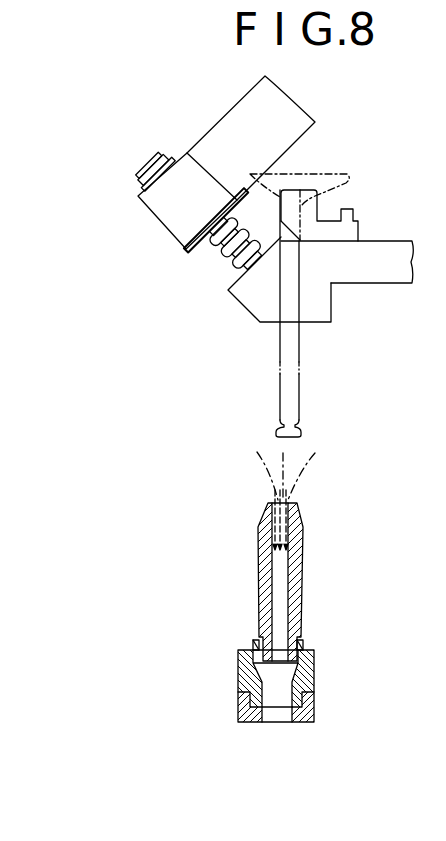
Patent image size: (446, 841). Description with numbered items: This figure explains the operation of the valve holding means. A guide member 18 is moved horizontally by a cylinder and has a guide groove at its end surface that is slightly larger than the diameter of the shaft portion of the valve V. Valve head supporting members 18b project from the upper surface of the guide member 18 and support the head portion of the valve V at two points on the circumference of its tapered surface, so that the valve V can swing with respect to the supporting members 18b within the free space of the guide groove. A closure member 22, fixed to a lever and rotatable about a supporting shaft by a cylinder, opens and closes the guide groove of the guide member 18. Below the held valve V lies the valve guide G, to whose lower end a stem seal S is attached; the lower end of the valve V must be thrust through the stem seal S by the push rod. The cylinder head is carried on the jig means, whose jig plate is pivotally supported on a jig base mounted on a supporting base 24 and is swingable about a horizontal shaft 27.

The horizontal shaft 27 is at (213, 135).
The guide member 18 is at (380, 268).
The valve head supporting members 18b is at (302, 192).
The closure member 22 is at (257, 298).
The valve V is at (293, 390).
The valve guide G is at (300, 562).
The stem seal S is at (253, 646).
The supporting base 24 is at (230, 688).